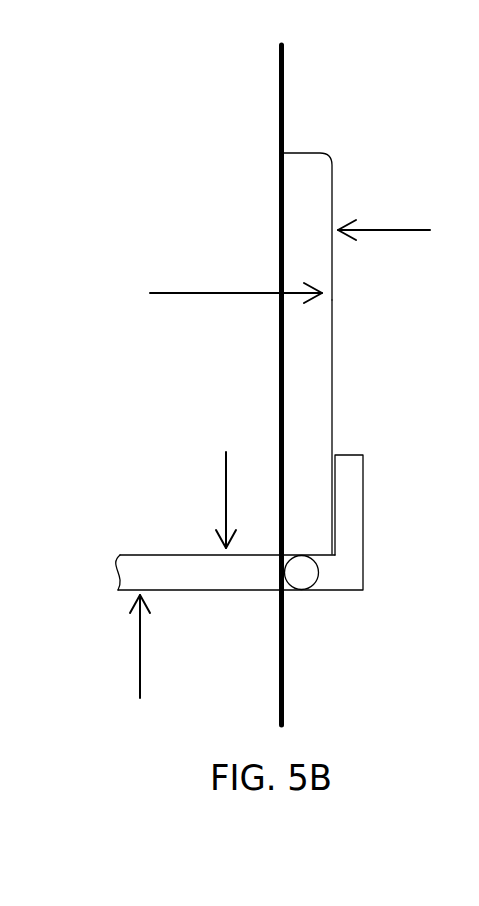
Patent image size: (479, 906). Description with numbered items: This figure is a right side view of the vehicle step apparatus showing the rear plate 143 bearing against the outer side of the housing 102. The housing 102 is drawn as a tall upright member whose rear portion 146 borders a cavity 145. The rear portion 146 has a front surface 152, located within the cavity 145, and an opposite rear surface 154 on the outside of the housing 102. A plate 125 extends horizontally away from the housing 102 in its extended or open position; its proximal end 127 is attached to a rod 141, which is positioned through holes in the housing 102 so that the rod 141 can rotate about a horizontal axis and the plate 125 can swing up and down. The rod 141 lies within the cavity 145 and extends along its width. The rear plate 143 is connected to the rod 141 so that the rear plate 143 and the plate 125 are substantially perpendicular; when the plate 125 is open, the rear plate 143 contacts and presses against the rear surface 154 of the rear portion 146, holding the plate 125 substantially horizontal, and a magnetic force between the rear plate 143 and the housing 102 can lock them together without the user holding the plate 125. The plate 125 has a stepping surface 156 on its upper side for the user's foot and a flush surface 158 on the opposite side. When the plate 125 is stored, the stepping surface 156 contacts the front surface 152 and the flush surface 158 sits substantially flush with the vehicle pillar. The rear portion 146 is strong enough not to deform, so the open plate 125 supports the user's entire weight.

The housing 102 is at (280, 101).
The cavity 145 is at (302, 238).
The rear portion 146 is at (333, 373).
The rear plate 143 is at (355, 532).
The plate 125 is at (188, 568).
The proximal end 127 is at (258, 572).
The rod 141 is at (300, 572).
The rear surface 154 is at (403, 230).
The front surface 152 is at (217, 293).
The stepping surface 156 is at (227, 484).
The flush surface 158 is at (136, 662).